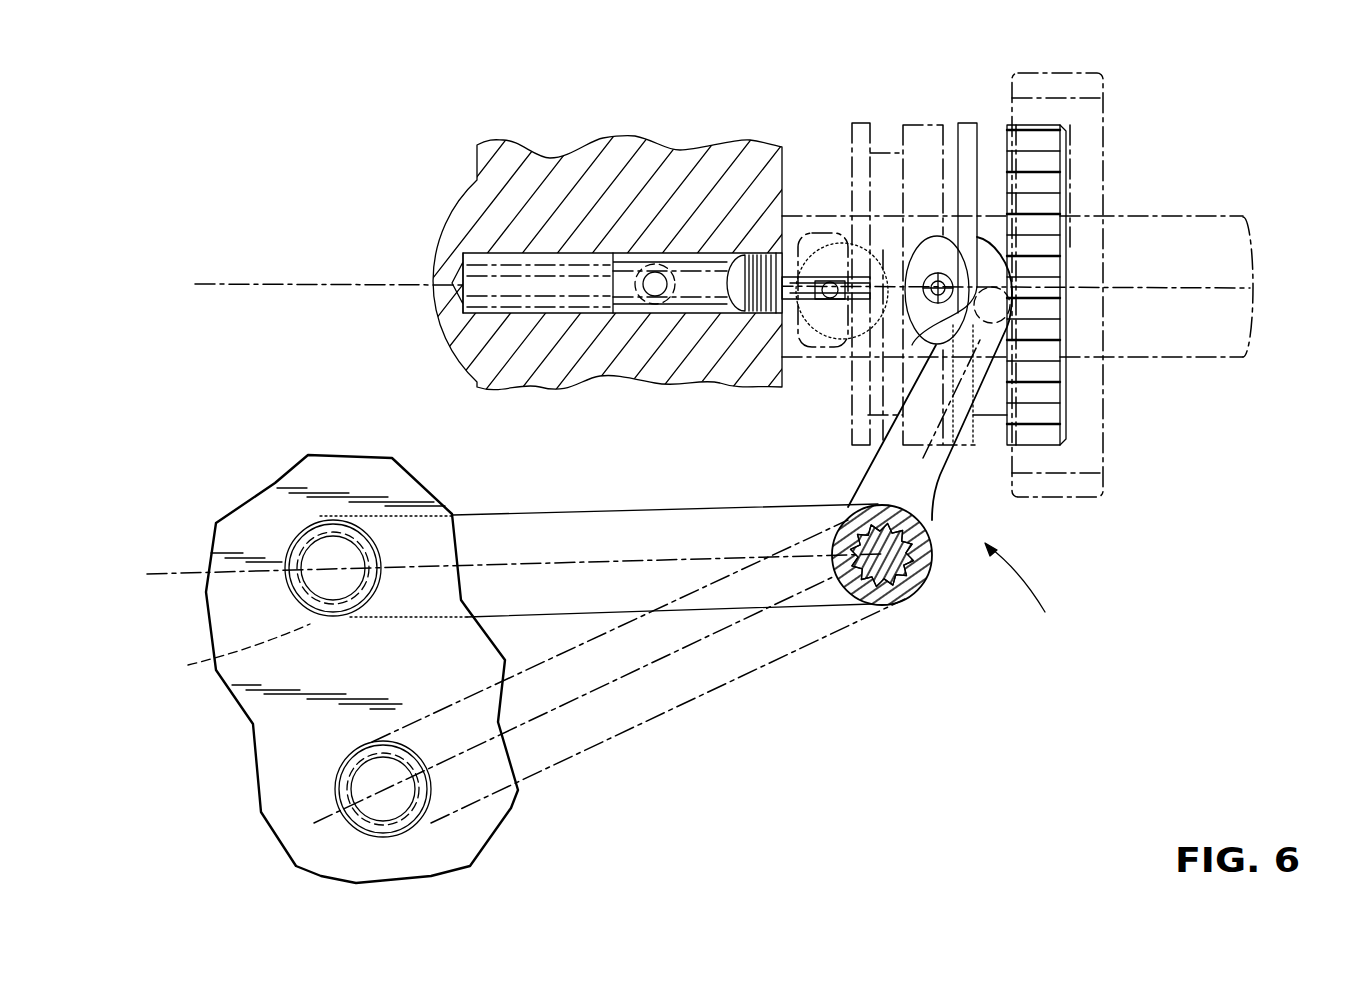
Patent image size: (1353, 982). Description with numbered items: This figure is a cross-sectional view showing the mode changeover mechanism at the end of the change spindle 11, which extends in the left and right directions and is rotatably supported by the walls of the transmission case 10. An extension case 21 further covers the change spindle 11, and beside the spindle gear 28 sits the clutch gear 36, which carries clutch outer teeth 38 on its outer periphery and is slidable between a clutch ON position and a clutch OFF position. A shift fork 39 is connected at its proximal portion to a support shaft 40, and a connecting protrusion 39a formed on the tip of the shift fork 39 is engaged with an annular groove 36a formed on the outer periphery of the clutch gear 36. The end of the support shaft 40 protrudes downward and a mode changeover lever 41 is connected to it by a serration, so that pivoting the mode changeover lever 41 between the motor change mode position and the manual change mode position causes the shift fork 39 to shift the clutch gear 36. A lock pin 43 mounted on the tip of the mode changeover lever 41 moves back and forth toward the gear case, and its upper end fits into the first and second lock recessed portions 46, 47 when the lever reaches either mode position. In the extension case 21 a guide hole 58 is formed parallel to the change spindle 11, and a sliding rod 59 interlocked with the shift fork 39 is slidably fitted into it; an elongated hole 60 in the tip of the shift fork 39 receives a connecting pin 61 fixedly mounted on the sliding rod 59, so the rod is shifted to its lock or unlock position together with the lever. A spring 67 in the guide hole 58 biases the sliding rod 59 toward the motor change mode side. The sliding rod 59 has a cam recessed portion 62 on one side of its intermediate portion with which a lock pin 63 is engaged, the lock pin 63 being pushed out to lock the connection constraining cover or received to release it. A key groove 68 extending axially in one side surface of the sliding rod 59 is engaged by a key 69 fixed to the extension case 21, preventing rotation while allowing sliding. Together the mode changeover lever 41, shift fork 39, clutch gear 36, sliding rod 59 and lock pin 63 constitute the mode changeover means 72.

The transmission case 10 is at (333, 468).
The change spindle 11 is at (1222, 228).
The extension case 21 is at (606, 150).
The spindle gear 28 is at (1104, 73).
The clutch gear 36 is at (962, 120).
The annular groove 36a is at (976, 123).
The clutch outer teeth 38 is at (1055, 158).
The shift fork 39 is at (938, 465).
The connecting protrusion 39a is at (1065, 305).
The support shaft 40 is at (917, 570).
The mode changeover lever 41 is at (630, 507).
The lock pin 43 is at (370, 617).
The first lock recessed portion 46 is at (227, 658).
The second lock recessed portion 47 is at (340, 815).
The guide hole 58 is at (563, 253).
The sliding rod 59 is at (742, 253).
The elongated hole 60 is at (948, 272).
The connecting pin 61 is at (925, 272).
The cam recessed portion 62 is at (795, 262).
The lock pin 63 is at (662, 268).
The spring 67 is at (460, 250).
The key groove 68 is at (811, 315).
The key 69 is at (742, 330).
The mode changeover means 72 is at (1032, 600).